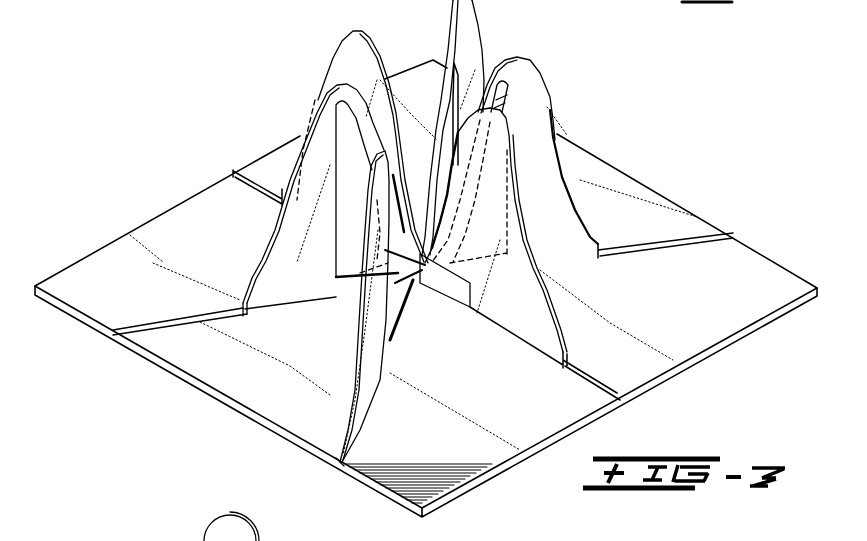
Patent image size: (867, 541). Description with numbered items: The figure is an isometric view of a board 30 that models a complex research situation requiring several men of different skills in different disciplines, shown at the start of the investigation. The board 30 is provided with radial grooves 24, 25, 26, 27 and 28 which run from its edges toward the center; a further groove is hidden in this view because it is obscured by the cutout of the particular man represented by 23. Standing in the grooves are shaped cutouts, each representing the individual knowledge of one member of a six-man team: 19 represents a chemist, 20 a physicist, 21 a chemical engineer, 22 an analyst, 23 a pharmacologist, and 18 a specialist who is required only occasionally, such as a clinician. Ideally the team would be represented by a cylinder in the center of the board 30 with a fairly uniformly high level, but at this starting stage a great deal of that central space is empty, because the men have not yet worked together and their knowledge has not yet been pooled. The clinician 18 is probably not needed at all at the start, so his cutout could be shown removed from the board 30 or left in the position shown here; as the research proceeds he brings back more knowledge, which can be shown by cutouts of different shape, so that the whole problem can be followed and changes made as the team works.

The specialist cutout 18 is at (364, 69).
The chemist cutout 19 is at (316, 199).
The physicist cutout 20 is at (366, 339).
The chemical engineer cutout 21 is at (500, 308).
The analyst cutout 22 is at (527, 182).
The pharmacologist cutout 23 is at (453, 51).
The radial groove 24 is at (236, 171).
The radial groove 25 is at (112, 332).
The radial groove 26 is at (339, 463).
The radial groove 27 is at (620, 399).
The radial groove 28 is at (731, 236).
The board 30 is at (478, 484).